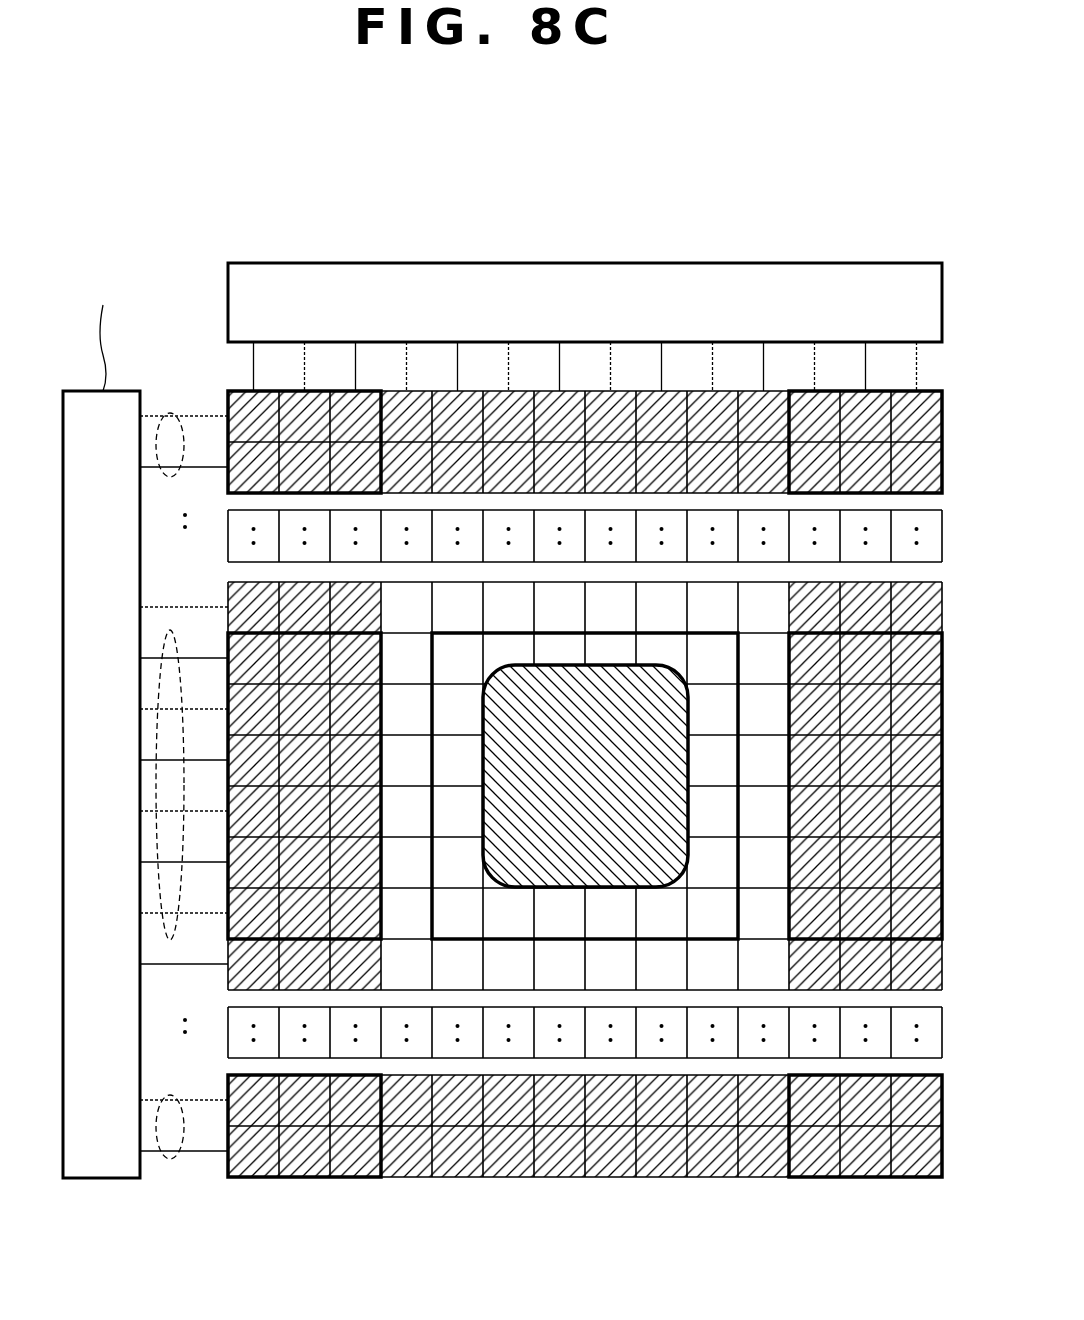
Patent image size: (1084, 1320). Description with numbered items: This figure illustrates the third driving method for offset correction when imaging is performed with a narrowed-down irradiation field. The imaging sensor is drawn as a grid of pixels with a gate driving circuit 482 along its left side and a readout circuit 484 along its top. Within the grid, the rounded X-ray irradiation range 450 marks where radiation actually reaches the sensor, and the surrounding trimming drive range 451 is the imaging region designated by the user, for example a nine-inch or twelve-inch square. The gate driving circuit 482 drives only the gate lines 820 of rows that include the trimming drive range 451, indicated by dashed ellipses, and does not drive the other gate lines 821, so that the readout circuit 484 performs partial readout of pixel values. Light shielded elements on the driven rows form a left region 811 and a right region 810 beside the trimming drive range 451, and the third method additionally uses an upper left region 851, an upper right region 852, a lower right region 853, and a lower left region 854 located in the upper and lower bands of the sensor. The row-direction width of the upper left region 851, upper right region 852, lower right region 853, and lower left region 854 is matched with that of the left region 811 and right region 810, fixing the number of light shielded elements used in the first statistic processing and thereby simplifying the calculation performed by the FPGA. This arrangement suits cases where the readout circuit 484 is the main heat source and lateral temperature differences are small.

The readout circuit 484 is at (349, 263).
The gate driving circuit 482 is at (132, 714).
The gate lines 820 is at (178, 477).
The other gate lines 821 is at (212, 964).
The upper left region 851 is at (240, 395).
The upper right region 852 is at (876, 411).
The lower right region 853 is at (812, 1155).
The lower left region 854 is at (300, 1155).
The left region 811 is at (357, 912).
The right region 810 is at (907, 918).
The X-ray irradiation range 450 is at (568, 889).
The trimming drive range 451 is at (718, 939).